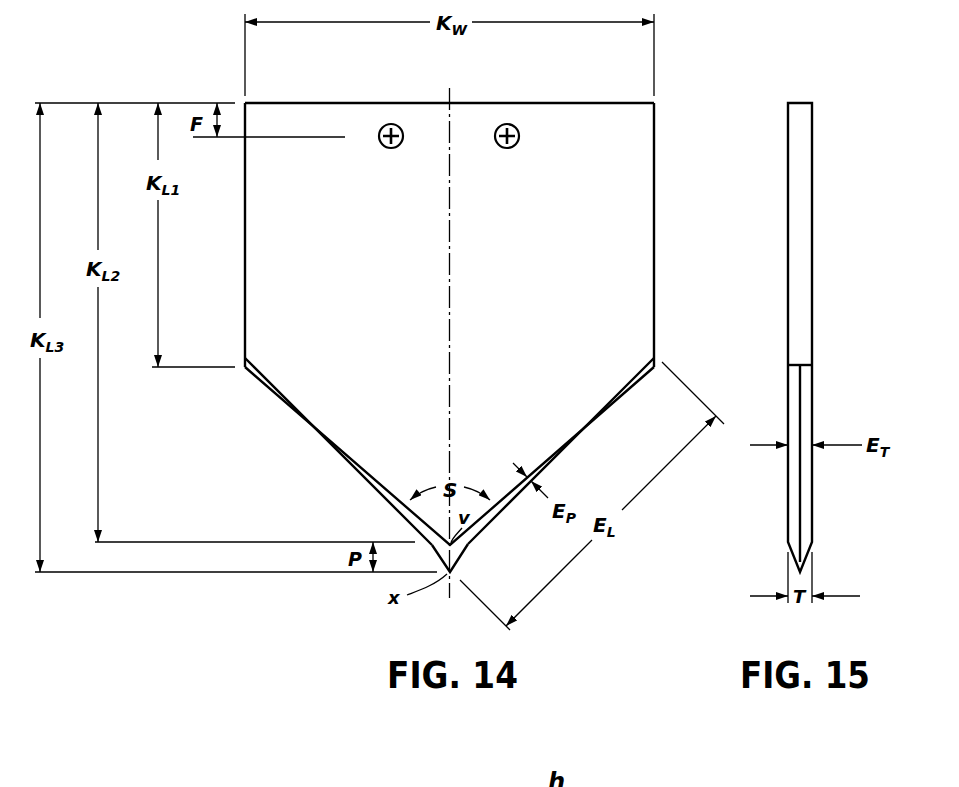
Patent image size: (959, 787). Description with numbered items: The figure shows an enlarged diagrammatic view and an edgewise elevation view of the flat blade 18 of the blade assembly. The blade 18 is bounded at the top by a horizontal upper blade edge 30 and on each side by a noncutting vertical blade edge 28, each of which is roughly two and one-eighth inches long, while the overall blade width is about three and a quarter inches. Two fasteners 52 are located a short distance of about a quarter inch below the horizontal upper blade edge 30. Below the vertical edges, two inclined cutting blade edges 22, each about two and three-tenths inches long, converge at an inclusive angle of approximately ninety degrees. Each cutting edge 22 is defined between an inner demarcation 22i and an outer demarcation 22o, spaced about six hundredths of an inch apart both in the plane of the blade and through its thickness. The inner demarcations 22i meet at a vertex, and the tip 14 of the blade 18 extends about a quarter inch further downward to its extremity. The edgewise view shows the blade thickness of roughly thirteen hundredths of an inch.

In FIG. 14, the tip 14 is at (456, 567).
In FIG. 14, the blade 18 is at (680, 134).
In FIG. 15, the blade 18 is at (849, 180).
In FIG. 14, the cutting blade edge 22 is at (461, 451).
In FIG. 15, the cutting blade edge 22 is at (843, 455).
In FIG. 14, the inner demarcation 22i is at (359, 462).
In FIG. 15, the inner demarcation 22i is at (815, 502).
In FIG. 14, the outer demarcation 22o is at (350, 474).
In FIG. 15, the outer demarcation 22o is at (805, 537).
In FIG. 14, the noncutting vertical blade edge 28 is at (241, 268).
In FIG. 15, the noncutting vertical blade edge 28 is at (815, 305).
In FIG. 14, the horizontal upper blade edge 30 is at (565, 101).
In FIG. 14, the fastener 52 is at (376, 141).